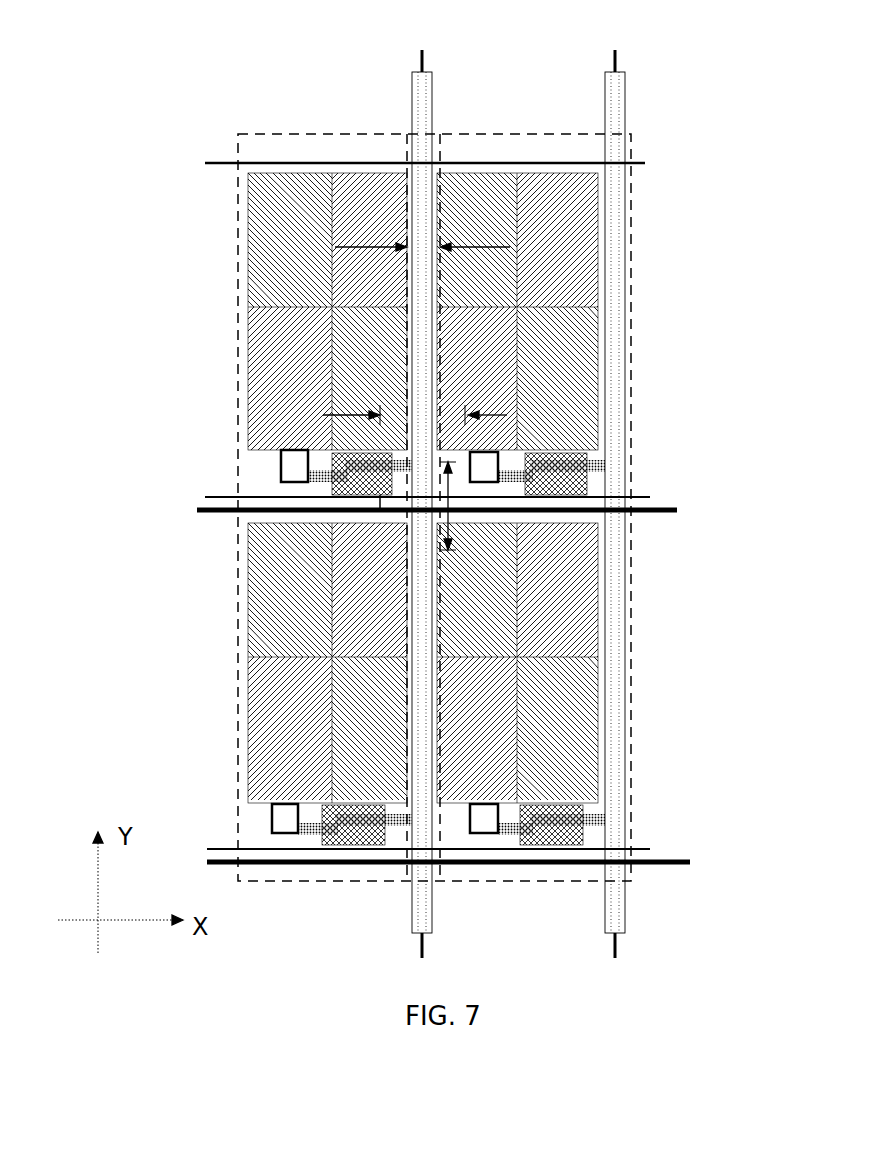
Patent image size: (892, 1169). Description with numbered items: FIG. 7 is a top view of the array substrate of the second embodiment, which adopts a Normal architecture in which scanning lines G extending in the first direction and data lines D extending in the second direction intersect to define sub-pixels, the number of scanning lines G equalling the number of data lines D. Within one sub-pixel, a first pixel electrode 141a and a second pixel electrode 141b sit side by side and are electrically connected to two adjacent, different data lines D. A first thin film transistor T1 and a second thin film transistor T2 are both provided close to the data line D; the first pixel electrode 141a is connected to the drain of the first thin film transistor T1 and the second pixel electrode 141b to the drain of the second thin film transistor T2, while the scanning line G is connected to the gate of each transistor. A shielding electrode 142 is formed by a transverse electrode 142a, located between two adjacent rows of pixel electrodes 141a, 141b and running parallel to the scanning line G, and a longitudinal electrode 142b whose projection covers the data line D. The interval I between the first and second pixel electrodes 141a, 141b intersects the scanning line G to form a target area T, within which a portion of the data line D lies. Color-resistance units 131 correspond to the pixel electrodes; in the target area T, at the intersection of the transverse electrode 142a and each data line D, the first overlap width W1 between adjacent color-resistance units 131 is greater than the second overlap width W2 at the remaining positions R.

The data line D is at (424, 62).
The scanning line G is at (432, 501).
The first pixel electrode 141a is at (265, 302).
The second pixel electrode 141b is at (580, 285).
The remaining positions R is at (425, 288).
The first overlap width W1 is at (436, 404).
The second overlap width W2 is at (429, 234).
The first thin film transistor T1 is at (330, 466).
The second thin film transistor T2 is at (595, 480).
The target area T is at (378, 518).
The interval I is at (462, 512).
The transverse electrode 142a is at (650, 514).
The longitudinal electrode 142b is at (616, 640).
The common electrode 142 is at (748, 548).
The color-resistance unit 131 is at (388, 873).